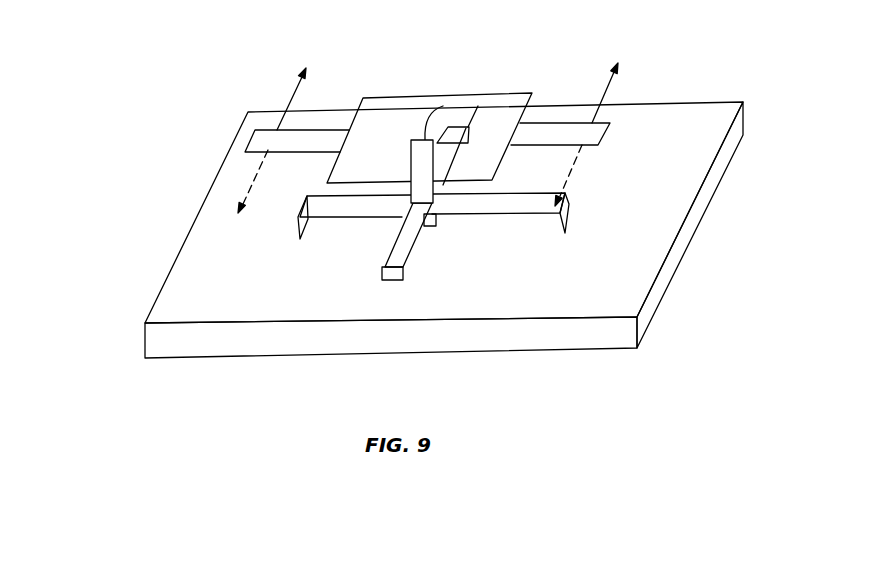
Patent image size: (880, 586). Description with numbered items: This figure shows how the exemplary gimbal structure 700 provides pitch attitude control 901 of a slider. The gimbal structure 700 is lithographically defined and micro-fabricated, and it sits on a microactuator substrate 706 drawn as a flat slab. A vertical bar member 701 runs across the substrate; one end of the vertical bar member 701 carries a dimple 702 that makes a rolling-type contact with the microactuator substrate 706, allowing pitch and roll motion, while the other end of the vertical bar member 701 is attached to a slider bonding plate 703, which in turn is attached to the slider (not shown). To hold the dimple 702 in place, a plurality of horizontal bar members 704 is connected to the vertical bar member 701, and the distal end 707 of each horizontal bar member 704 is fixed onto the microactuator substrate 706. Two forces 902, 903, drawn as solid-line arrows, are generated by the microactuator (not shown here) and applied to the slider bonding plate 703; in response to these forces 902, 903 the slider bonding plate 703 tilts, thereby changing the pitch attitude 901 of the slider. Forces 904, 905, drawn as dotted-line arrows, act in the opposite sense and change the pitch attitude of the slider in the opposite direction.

The gimbal structure 700 is at (404, 193).
The vertical bar member 701 is at (425, 156).
The dimple 702 is at (436, 223).
The slider bonding plate 703 is at (390, 113).
The horizontal bar members 704 is at (455, 128).
The microactuator substrate 706 is at (622, 291).
The distal end 707 is at (470, 136).
The pitch attitude control 901 is at (419, 165).
The force 902 is at (291, 97).
The force 903 is at (605, 94).
The force 904 is at (250, 180).
The force 905 is at (571, 170).